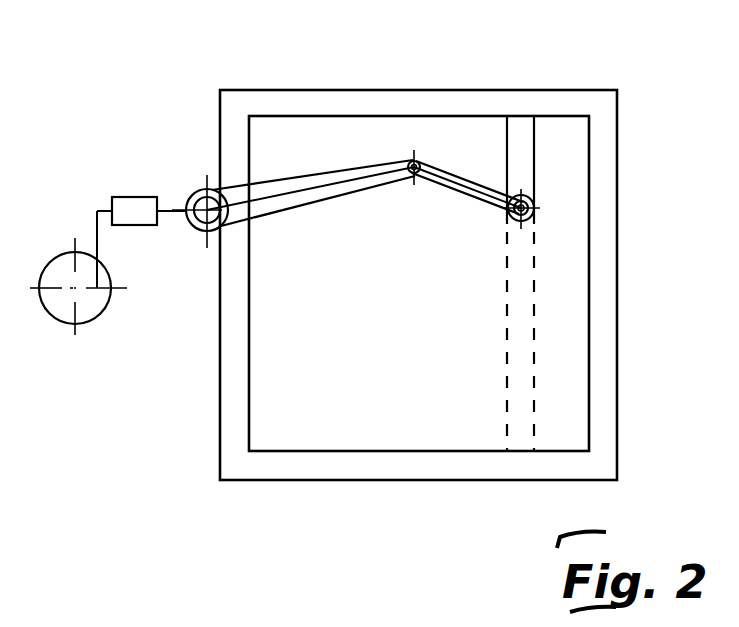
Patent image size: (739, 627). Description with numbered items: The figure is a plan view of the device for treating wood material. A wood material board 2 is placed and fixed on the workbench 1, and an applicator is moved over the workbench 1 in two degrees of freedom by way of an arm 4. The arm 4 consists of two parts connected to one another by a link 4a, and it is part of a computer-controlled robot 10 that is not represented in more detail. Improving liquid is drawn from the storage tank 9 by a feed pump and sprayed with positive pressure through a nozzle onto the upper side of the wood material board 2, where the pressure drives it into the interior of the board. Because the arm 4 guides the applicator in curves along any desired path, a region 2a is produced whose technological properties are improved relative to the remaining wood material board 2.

The workbench 1 is at (364, 467).
The wood material board 2 is at (314, 415).
The improved region 2a is at (518, 140).
The arm 4 is at (440, 188).
The link 4a is at (420, 162).
The tank 9 is at (87, 308).
The computer-controlled robot 10 is at (143, 197).